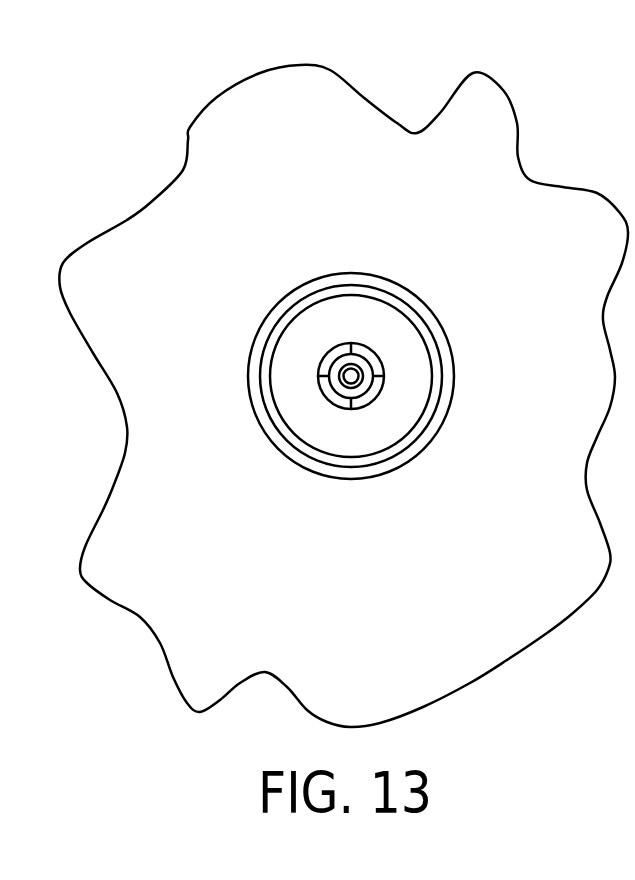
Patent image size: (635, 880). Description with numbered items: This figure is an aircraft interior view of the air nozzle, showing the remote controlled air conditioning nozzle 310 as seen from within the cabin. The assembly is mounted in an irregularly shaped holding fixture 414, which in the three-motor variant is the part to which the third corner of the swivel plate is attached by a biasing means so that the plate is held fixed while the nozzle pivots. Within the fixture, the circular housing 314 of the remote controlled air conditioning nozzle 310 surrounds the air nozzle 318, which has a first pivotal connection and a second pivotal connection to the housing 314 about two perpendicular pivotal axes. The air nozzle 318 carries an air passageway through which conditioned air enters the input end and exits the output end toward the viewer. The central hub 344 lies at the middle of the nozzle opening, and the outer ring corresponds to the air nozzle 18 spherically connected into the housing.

The holding fixture 414 is at (240, 170).
The air nozzle 18 is at (293, 295).
The remote controlled air conditioning nozzle 310 is at (430, 307).
The housing 314 is at (402, 446).
The air nozzle 318 is at (367, 311).
The hub 344 is at (335, 405).